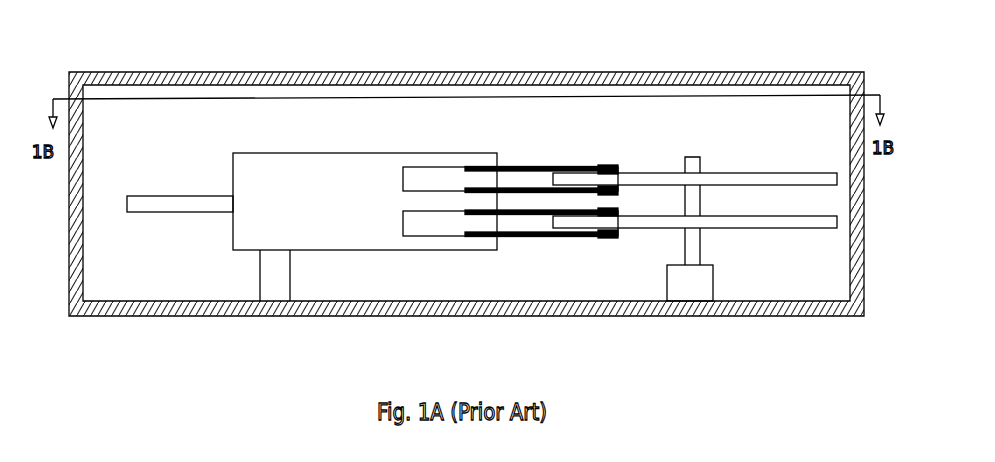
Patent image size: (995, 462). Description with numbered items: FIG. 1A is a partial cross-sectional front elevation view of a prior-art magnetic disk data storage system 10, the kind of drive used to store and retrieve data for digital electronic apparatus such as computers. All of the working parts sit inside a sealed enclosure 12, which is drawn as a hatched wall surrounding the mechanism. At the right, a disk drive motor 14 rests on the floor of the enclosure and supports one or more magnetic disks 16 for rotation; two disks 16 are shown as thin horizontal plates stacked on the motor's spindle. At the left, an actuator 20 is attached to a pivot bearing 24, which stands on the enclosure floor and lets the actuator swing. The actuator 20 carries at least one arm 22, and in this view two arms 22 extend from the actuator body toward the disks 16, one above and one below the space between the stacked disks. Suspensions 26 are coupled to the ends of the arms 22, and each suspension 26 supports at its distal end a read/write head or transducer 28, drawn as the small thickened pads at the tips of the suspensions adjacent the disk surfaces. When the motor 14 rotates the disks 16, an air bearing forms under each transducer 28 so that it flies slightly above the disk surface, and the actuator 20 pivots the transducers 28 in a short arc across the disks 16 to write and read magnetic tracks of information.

The magnetic disk data storage system 10 is at (466, 176).
The sealed enclosure 12 is at (473, 313).
The disk drive motor 14 is at (692, 287).
The magnetic disk 16 is at (745, 171).
The actuator 20 is at (350, 147).
The arm 22 is at (457, 152).
The pivot bearing 24 is at (275, 290).
The suspension 26 is at (580, 167).
The read/write head or transducer 28 is at (620, 172).